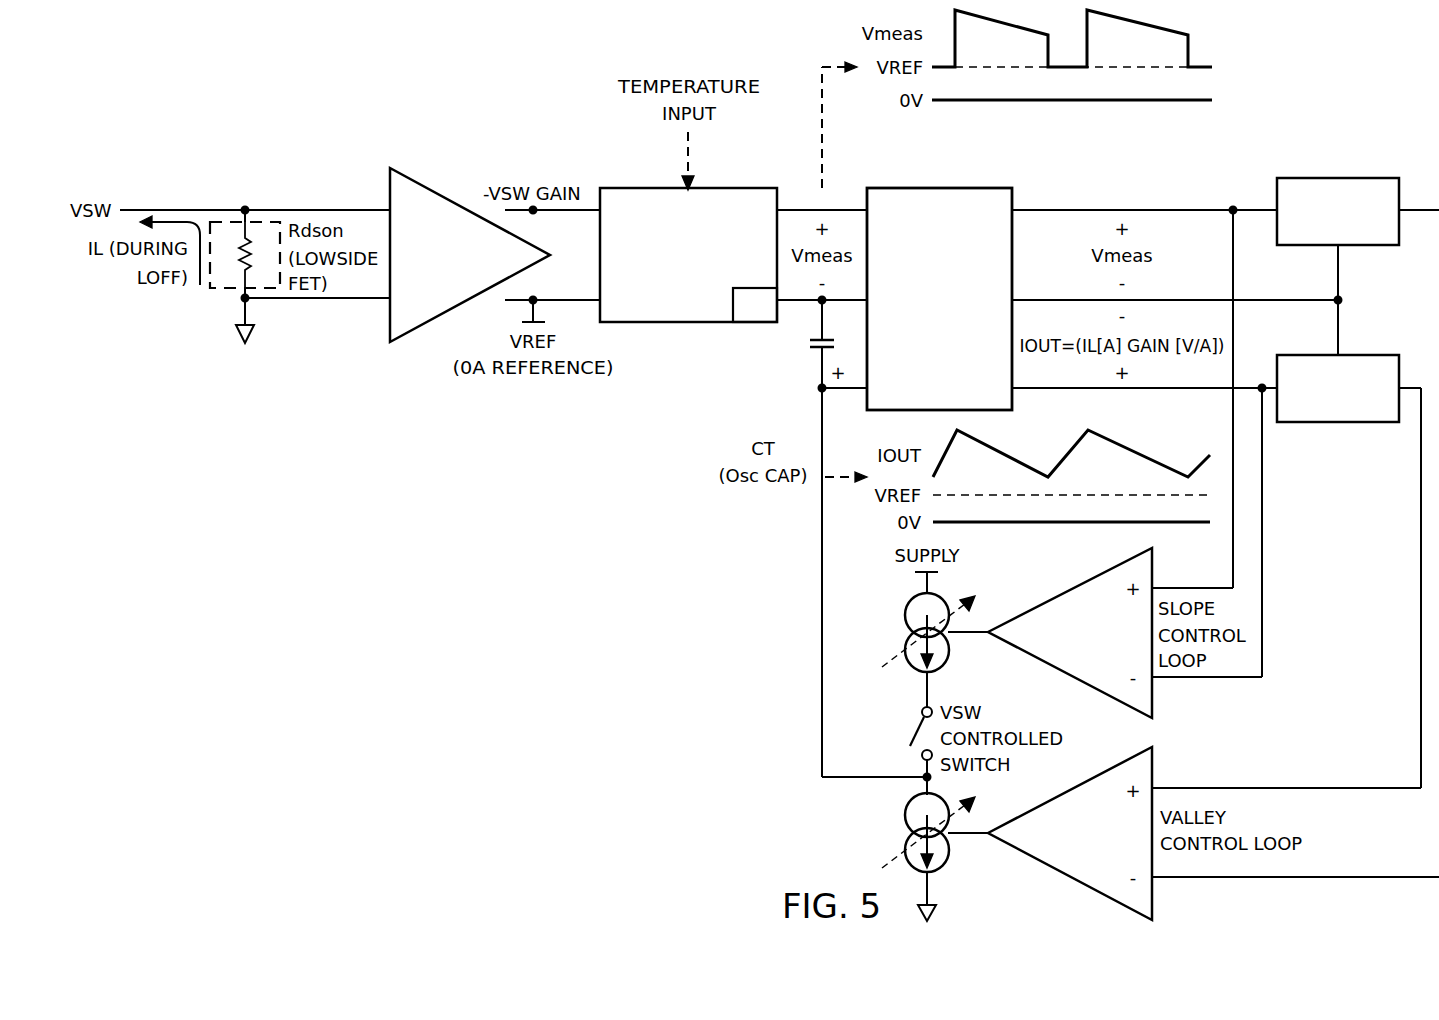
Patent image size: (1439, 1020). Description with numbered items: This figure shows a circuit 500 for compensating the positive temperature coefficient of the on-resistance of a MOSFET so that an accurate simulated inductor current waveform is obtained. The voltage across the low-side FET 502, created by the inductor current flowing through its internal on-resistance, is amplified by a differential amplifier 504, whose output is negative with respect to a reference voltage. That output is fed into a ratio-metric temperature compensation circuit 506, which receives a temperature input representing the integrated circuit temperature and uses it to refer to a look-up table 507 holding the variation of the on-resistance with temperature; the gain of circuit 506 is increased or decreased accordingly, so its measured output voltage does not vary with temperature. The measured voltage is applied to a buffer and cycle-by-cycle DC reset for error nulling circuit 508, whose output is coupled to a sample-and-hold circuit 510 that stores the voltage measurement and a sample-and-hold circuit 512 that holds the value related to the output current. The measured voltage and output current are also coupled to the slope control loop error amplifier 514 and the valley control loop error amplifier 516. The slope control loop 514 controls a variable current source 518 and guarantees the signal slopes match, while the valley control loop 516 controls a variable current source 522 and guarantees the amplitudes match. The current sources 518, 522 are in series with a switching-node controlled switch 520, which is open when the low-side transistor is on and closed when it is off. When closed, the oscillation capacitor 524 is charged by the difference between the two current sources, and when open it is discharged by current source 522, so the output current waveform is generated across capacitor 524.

The temperature compensation circuit 500 is at (443, 98).
The low-side FET 502 is at (218, 294).
The differential amplifier 504 is at (470, 255).
The ratio-metric temperature compensation circuit 506 is at (663, 322).
The look-up table 507 is at (752, 322).
The buffer and cycle-by-cycle DC reset circuit for error nulling 508 is at (940, 188).
The sample-and-hold circuit 510 is at (1350, 178).
The sample-and-hold circuit 512 is at (1350, 422).
The slope control loop error amplifier 514 is at (1070, 633).
The valley control loop error amplifier 516 is at (1070, 833).
The variable current source 518 is at (905, 616).
The VSW controlled switch 520 is at (910, 728).
The variable current source 522 is at (952, 853).
The oscillation capacitor CT 524 is at (822, 390).